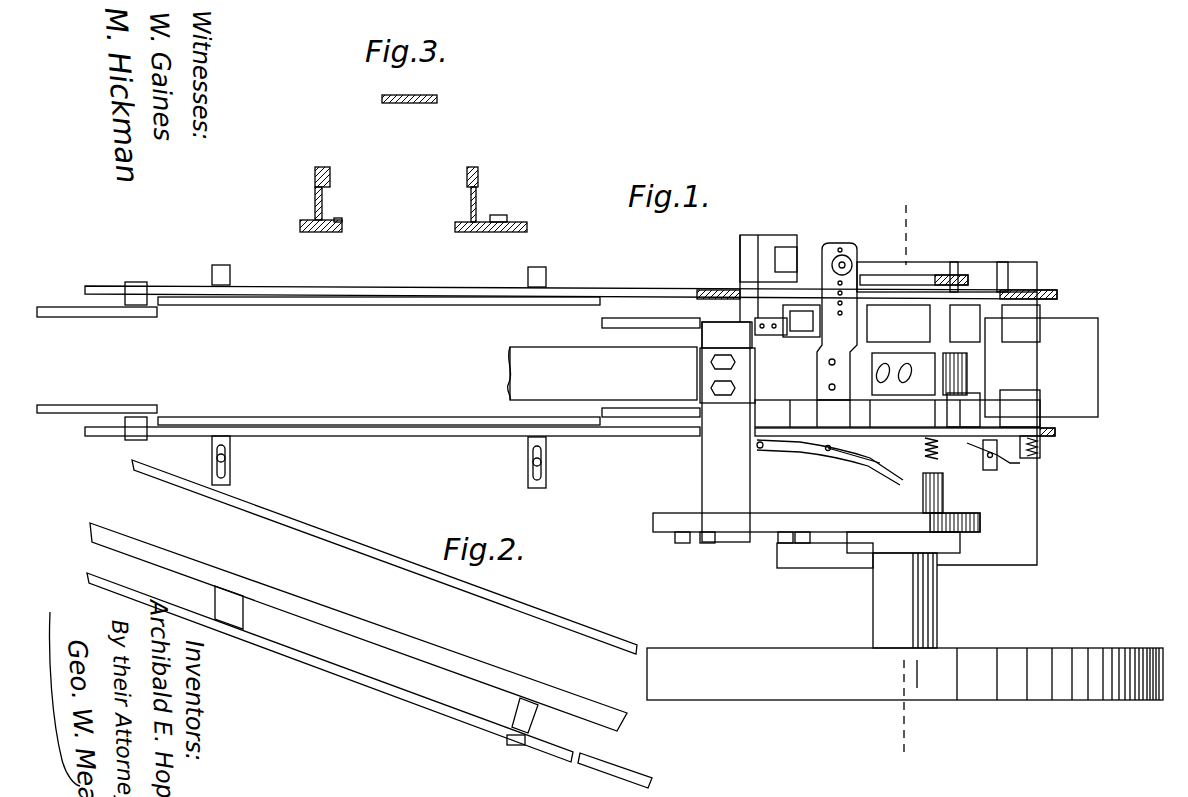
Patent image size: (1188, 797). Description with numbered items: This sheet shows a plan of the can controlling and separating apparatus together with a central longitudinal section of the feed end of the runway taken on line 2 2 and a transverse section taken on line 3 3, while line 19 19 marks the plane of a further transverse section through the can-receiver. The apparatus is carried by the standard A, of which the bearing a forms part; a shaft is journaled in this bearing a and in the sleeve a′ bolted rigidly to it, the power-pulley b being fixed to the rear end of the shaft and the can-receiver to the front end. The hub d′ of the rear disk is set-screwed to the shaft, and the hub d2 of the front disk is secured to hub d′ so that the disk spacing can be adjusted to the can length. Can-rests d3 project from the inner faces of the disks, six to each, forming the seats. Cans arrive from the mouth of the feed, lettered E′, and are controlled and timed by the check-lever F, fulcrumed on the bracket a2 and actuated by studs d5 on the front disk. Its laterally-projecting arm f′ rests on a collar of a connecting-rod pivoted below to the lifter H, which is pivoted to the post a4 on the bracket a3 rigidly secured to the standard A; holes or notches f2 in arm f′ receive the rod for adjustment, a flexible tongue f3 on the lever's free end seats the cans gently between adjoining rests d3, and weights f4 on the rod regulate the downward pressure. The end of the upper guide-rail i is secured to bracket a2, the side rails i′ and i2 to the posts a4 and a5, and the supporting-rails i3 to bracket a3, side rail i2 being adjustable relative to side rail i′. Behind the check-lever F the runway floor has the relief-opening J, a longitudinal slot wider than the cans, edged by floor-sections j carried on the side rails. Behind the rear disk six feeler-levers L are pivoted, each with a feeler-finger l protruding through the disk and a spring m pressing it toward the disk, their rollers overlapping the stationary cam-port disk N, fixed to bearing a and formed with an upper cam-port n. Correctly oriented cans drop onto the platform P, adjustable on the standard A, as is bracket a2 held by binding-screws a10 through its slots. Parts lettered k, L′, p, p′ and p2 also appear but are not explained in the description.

In FIG. 2, the upper guide-rail i is at (384, 557).
In FIG. 3, the side rail i′ is at (362, 168).
In FIG. 1, the side rail i′ is at (571, 332).
In FIG. 2, the side rail i′ is at (358, 627).
In FIG. 3, the side rail i2 is at (485, 197).
In FIG. 1, the side rail i2 is at (544, 458).
In FIG. 1, the supporting-rail i3 is at (651, 357).
In FIG. 2, the supporting-rail i3 is at (615, 763).
In FIG. 3, the floor-section j is at (343, 222).
In FIG. 1, the floor-section j is at (318, 419).
In FIG. 2, the floor-section j is at (330, 667).
In FIG. 3, the relief-opening J is at (403, 213).
In FIG. 1, the relief-opening J is at (318, 318).
In FIG. 2, the relief-opening J is at (390, 711).
In FIG. 3, the section line 2 is at (357, 101).
In FIG. 3, the section line 3 is at (350, 233).
In FIG. 1, the section line 3 is at (537, 267).
In FIG. 1, the section line 19 is at (903, 483).
In FIG. 1, the bracket E′ is at (743, 315).
In FIG. 1, the bearing a is at (816, 513).
In FIG. 1, the sleeve a′ is at (905, 600).
In FIG. 1, the bracket a2 is at (727, 432).
In FIG. 1, the bracket a3 is at (797, 495).
In FIG. 1, the post a4 is at (765, 280).
In FIG. 1, the post a5 is at (766, 461).
In FIG. 1, the binding-screw a10 is at (825, 555).
In FIG. 1, the power-pulley b is at (905, 674).
In FIG. 1, the hub d′ is at (897, 413).
In FIG. 1, the hub d2 is at (898, 323).
In FIG. 1, the can-rest d3 is at (911, 366).
In FIG. 1, the stud d5 is at (965, 262).
In FIG. 1, the laterally-projecting arm f′ is at (837, 321).
In FIG. 1, the holes or notches f2 is at (840, 246).
In FIG. 1, the flexible tongue f3 is at (930, 371).
In FIG. 1, the weights f4 is at (855, 256).
In FIG. 1, the check-lever F is at (749, 375).
In FIG. 1, the lifter H is at (929, 269).
In FIG. 1, the stud k is at (852, 262).
In FIG. 1, the feeler-lever L is at (830, 462).
In FIG. 1, the lever L′ is at (996, 460).
In FIG. 1, the feeler-finger l is at (1014, 403).
In FIG. 1, the spring m is at (1045, 450).
In FIG. 1, the upper cam-port n is at (879, 484).
In FIG. 1, the cam-port disk N is at (842, 495).
In FIG. 1, the standard A is at (857, 505).
In FIG. 1, the platform P is at (1017, 428).
In FIG. 1, the rack p is at (1084, 293).
In FIG. 1, the rail p′ is at (916, 429).
In FIG. 1, the rack end p2 is at (1064, 278).